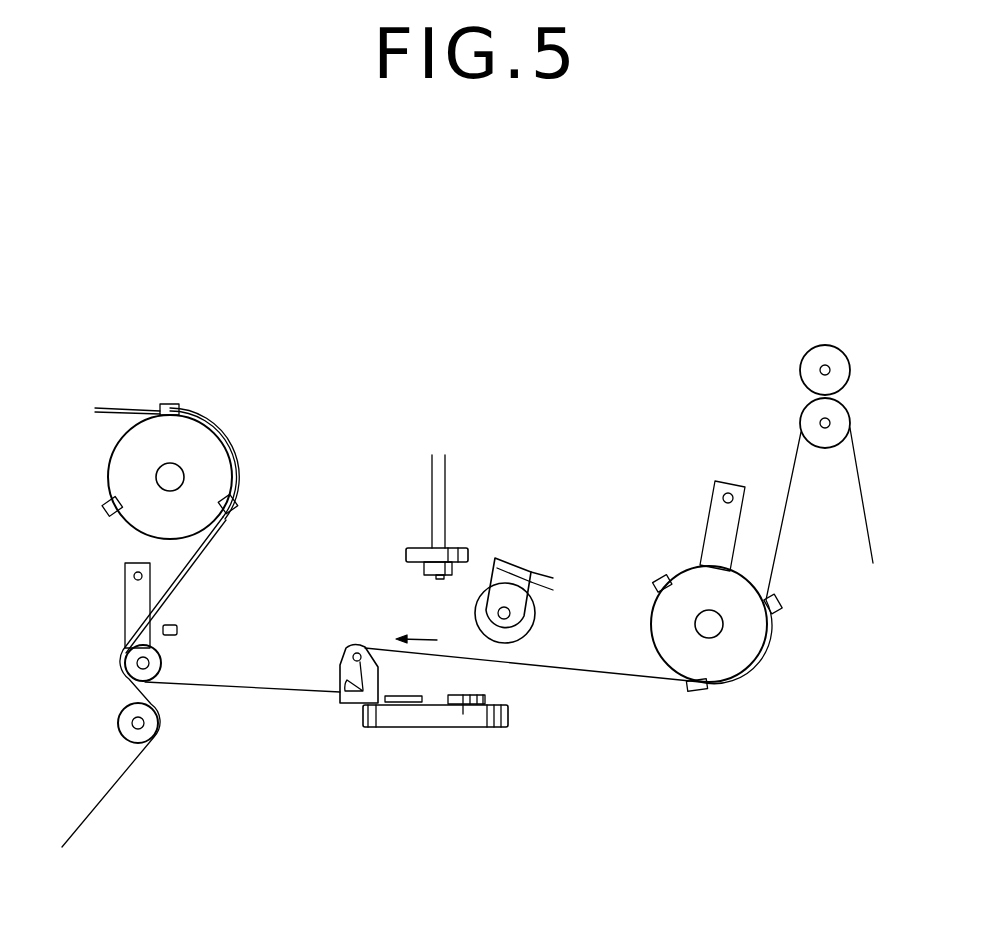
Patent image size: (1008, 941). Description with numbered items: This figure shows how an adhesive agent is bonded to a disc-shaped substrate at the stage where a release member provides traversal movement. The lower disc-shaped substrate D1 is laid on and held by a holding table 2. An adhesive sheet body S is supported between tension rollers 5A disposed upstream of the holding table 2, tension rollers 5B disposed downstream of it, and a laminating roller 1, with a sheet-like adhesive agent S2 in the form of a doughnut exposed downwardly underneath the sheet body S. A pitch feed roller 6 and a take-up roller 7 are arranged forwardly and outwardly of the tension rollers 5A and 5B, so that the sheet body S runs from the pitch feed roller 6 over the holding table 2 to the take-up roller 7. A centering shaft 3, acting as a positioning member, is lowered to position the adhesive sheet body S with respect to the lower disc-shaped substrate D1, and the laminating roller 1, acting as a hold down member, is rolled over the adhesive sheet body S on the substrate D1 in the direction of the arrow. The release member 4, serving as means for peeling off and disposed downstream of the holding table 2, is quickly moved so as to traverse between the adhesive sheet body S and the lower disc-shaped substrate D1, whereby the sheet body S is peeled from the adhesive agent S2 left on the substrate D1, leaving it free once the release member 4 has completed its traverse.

The laminating roller 1 is at (530, 627).
The holding table 2 is at (462, 718).
The centering shaft 3 is at (458, 548).
The release member 4 is at (340, 668).
The tension rollers 5A is at (160, 658).
The tension rollers 5B is at (750, 648).
The pitch feed roller 6 is at (197, 430).
The take-up roller 7 is at (845, 352).
The adhesive sheet body S is at (258, 693).
The adhesive agent S2 is at (402, 717).
The lower disc-shaped substrate D1 is at (485, 699).